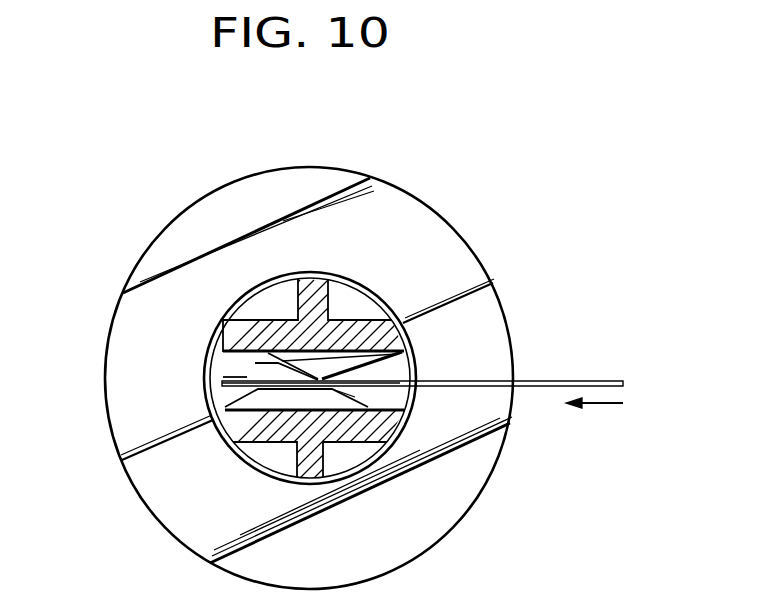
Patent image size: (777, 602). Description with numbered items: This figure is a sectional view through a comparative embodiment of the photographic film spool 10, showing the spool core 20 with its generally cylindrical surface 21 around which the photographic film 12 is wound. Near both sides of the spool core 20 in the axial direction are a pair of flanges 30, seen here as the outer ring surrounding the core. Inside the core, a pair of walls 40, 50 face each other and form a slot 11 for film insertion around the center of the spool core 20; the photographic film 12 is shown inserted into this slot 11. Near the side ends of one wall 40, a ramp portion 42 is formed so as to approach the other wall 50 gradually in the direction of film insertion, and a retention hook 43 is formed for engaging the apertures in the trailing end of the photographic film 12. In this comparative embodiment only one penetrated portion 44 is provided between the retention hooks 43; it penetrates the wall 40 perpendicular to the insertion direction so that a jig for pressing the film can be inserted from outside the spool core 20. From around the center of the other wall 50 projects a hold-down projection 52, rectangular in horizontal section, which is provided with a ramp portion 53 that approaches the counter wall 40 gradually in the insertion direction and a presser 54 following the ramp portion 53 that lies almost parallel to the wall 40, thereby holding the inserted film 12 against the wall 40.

The photographic film spool 10 is at (295, 157).
The slot 11 is at (398, 368).
The photographic film 12 is at (593, 378).
The spool core 20 is at (360, 283).
The cylindrical surface 21 is at (318, 273).
The flange 30 is at (483, 269).
The wall 40 is at (273, 462).
The ramp portion 42 is at (378, 398).
The retention hook 43 is at (255, 313).
The penetrated portion 44 is at (240, 452).
The wall 50 is at (275, 287).
The hold-down projection 52 is at (232, 352).
The ramp portion 53 is at (400, 352).
The presser 54 is at (217, 370).